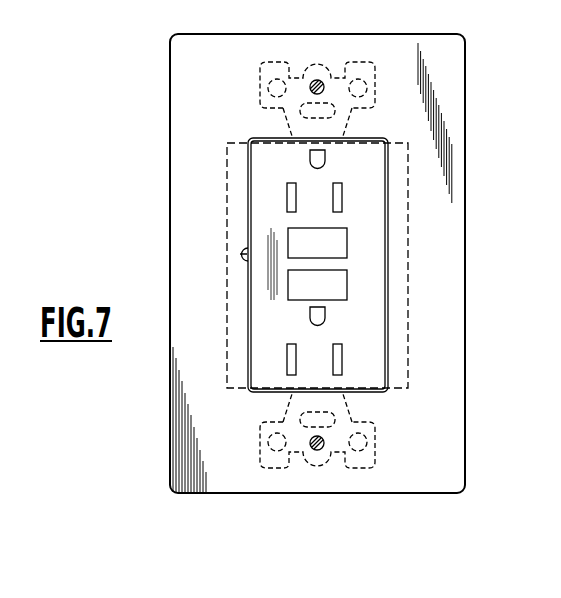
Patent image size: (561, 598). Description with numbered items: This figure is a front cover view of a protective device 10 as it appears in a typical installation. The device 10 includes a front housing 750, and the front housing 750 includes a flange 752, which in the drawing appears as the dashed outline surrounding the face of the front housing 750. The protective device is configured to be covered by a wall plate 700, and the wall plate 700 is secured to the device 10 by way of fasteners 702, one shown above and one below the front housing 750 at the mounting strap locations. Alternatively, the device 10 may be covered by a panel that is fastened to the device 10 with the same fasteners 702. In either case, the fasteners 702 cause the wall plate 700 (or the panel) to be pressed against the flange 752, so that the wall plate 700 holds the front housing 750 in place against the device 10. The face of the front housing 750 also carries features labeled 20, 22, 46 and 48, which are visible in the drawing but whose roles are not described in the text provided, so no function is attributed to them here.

The wall plate 700 is at (181, 131).
The fasteners 702 is at (317, 79).
The front housing 750 is at (258, 150).
The flange 752 is at (232, 190).
The device 10 is at (348, 158).
The hot slot 20 is at (288, 192).
The neutral slot 22 is at (341, 192).
The test button 48 is at (335, 250).
The reset button 46 is at (335, 293).